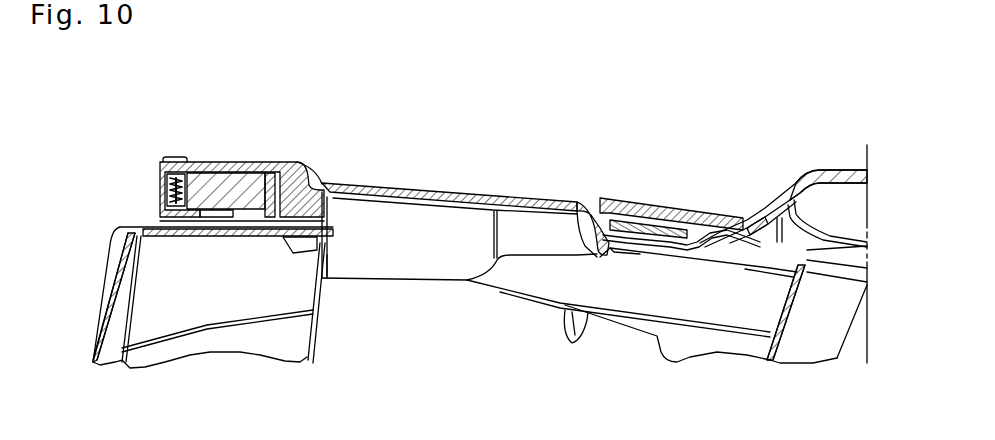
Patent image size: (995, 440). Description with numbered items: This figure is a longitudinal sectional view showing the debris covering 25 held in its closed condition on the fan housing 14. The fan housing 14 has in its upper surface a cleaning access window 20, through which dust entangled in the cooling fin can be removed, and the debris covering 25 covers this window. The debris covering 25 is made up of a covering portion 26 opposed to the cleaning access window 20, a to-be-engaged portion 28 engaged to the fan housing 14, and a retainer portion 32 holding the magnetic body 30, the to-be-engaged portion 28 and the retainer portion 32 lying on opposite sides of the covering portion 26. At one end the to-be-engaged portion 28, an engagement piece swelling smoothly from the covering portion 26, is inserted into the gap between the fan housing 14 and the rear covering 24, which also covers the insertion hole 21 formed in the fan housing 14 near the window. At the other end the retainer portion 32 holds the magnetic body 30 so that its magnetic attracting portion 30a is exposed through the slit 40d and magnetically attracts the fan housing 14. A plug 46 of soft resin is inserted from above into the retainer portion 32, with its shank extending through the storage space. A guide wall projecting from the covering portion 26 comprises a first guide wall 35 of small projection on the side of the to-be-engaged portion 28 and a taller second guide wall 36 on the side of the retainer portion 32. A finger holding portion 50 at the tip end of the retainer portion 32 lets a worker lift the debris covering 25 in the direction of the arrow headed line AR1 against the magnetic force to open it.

The fan housing 14 is at (124, 232).
The cleaning access window 20 is at (578, 215).
The insertion hole 21 is at (698, 240).
The rear covering 24 is at (837, 173).
The debris covering 25 is at (566, 188).
The covering portion 26 is at (448, 192).
The to-be-engaged portion 28 is at (647, 224).
The magnetic body 30 is at (246, 181).
The magnetic attracting portion 30a is at (235, 218).
The retainer portion 32 is at (222, 161).
The first guide wall 35 is at (588, 250).
The second guide wall 36 is at (330, 257).
The slit 40d is at (194, 222).
The plug 46 is at (177, 156).
The finger holding portion 50 is at (158, 189).
The arrow headed line AR1 is at (120, 170).